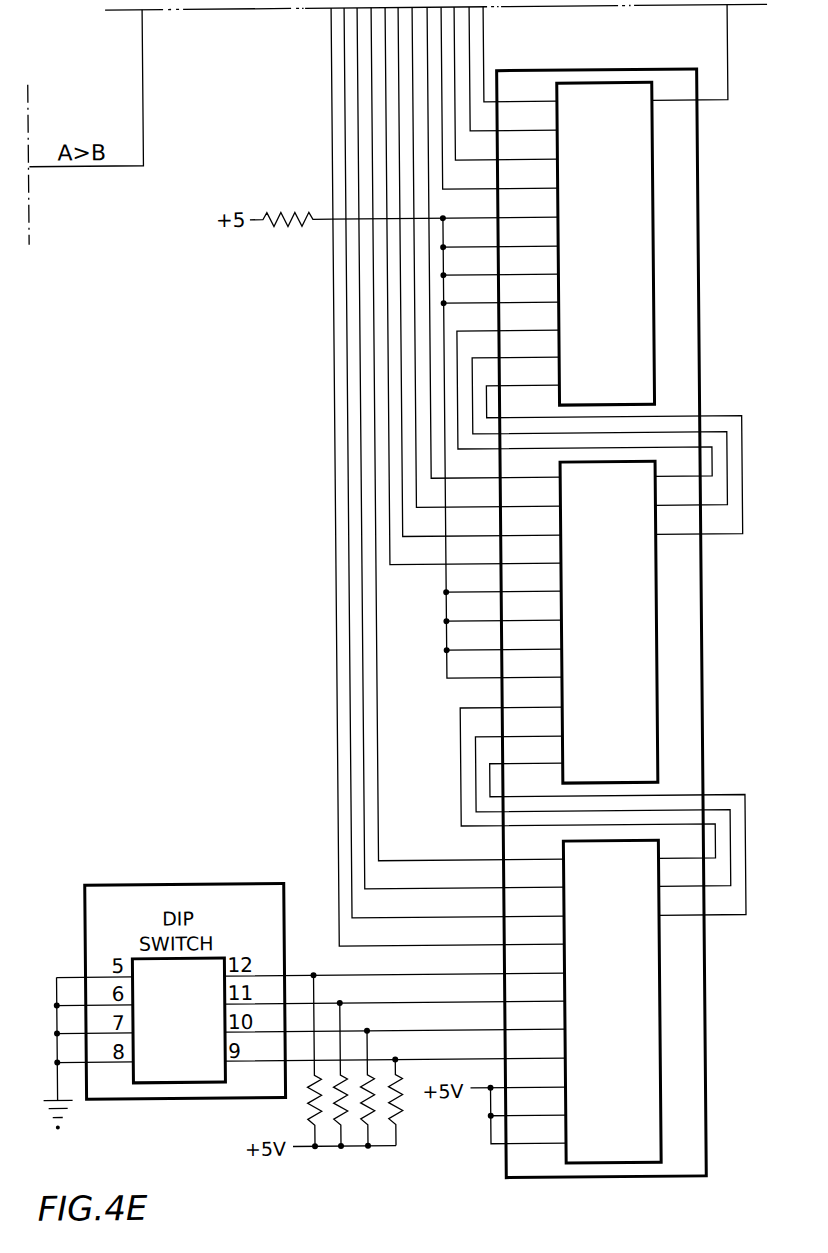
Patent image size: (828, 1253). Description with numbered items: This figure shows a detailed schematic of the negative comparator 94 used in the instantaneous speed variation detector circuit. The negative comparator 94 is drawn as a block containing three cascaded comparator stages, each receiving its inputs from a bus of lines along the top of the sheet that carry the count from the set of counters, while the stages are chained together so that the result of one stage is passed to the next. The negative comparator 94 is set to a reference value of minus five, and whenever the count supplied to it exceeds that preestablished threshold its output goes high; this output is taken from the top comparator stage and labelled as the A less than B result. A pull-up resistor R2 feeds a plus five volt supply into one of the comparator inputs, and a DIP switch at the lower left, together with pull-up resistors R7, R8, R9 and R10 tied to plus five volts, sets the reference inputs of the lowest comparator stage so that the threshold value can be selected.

The negative comparator 94 is at (715, 337).
The resistor R2 is at (291, 219).
The resistor R7 is at (314, 1074).
The resistor R8 is at (339, 1098).
The resistor R9 is at (369, 1102).
The resistor R10 is at (401, 1126).